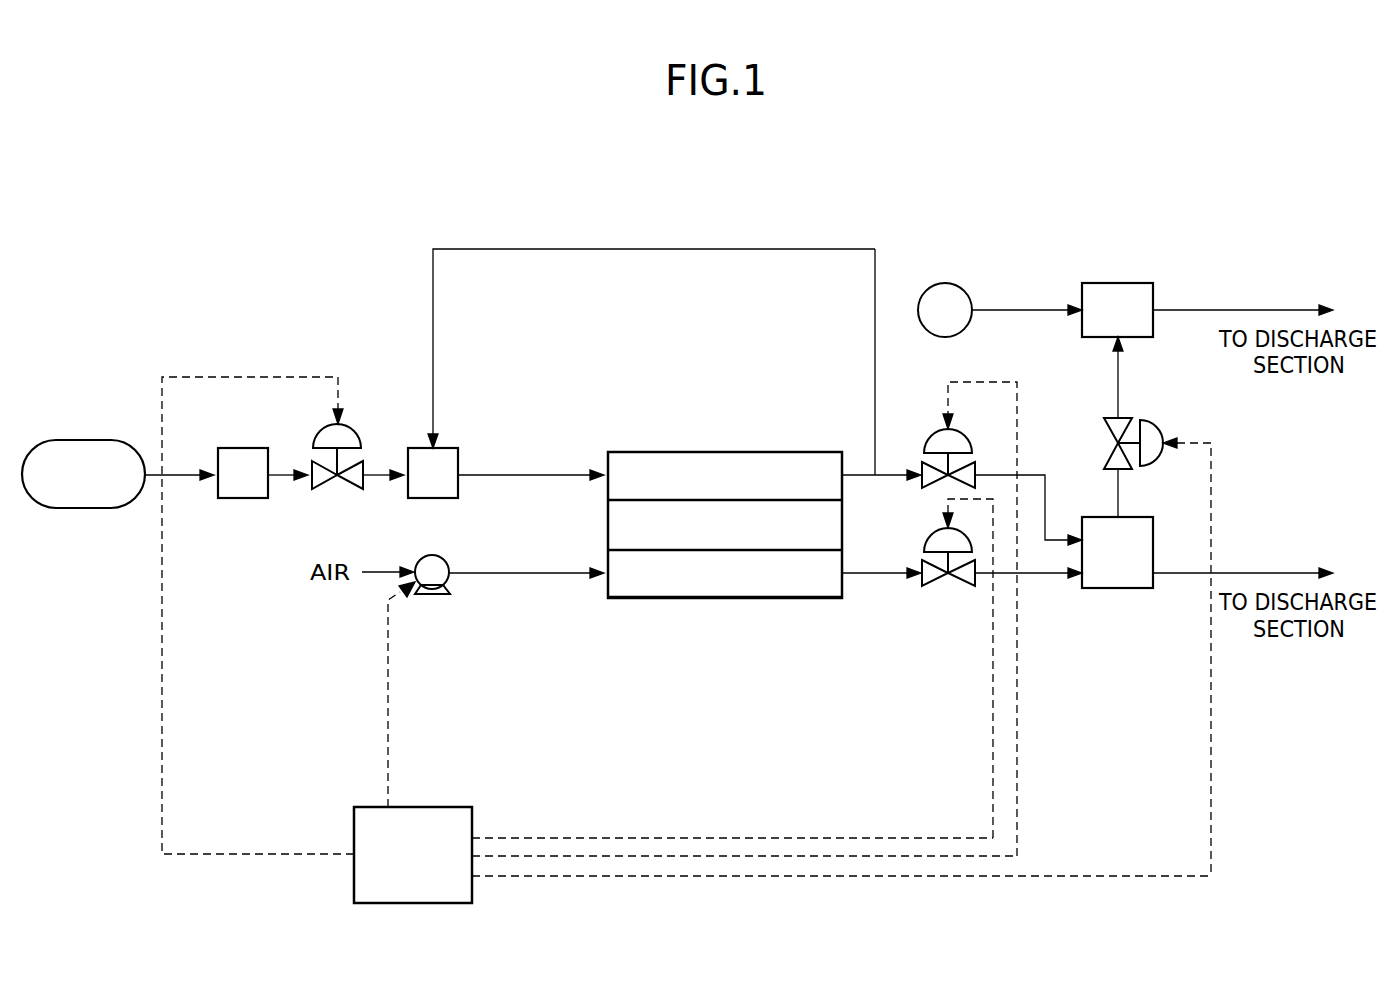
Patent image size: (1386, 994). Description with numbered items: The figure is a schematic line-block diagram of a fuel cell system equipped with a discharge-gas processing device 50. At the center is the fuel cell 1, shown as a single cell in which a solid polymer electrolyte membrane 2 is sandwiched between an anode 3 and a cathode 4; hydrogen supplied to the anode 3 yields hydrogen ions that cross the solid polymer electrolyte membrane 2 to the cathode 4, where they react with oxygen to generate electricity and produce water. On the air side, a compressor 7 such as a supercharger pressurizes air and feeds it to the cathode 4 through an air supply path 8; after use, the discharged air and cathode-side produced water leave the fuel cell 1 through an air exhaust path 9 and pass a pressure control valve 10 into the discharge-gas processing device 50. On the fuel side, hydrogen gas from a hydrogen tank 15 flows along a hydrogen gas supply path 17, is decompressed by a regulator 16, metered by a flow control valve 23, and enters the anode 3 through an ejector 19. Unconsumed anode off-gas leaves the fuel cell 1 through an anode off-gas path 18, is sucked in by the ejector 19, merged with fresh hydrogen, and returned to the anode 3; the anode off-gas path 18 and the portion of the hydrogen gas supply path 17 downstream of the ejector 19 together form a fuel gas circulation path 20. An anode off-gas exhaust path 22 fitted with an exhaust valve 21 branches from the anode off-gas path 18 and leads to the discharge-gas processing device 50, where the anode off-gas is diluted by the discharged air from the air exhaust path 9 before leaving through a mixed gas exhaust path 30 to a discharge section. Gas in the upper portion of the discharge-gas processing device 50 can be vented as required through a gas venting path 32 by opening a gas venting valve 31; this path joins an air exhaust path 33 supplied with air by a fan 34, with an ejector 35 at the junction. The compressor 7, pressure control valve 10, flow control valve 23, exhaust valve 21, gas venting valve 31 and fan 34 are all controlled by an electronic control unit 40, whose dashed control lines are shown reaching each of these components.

The fuel cell 1 is at (747, 522).
The solid polymer electrolyte membrane 2 is at (832, 525).
The anode 3 is at (795, 462).
The cathode 4 is at (800, 585).
The compressor 7 is at (433, 597).
The air supply path 8 is at (522, 580).
The air exhaust path 9 is at (880, 580).
The pressure control valve 10 is at (955, 592).
The hydrogen tank 15 is at (78, 440).
The regulator 16 is at (247, 502).
The hydrogen gas supply path 17 is at (190, 467).
The anode off-gas path 18 is at (727, 247).
The ejector 19 is at (447, 447).
The fuel gas circulation path 20 is at (822, 247).
The exhaust valve 21 is at (933, 430).
The anode off-gas exhaust path 22 is at (895, 470).
The flow control valve 23 is at (355, 442).
The mixed gas exhaust path 30 is at (1187, 570).
The gas venting valve 31 is at (1152, 424).
The gas venting path 32 is at (1117, 382).
The air exhaust path 33 is at (997, 308).
The fan 34 is at (945, 282).
The ejector 35 is at (1117, 282).
The electronic control unit 40 is at (443, 805).
The discharge-gas processing device 50 is at (1122, 590).